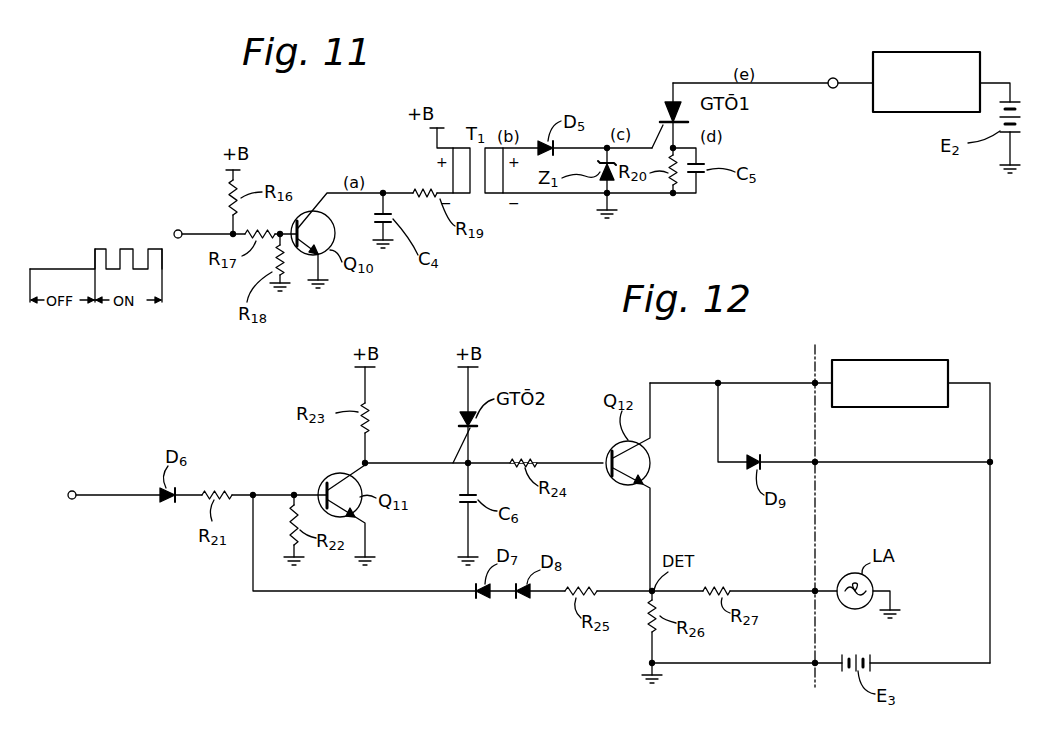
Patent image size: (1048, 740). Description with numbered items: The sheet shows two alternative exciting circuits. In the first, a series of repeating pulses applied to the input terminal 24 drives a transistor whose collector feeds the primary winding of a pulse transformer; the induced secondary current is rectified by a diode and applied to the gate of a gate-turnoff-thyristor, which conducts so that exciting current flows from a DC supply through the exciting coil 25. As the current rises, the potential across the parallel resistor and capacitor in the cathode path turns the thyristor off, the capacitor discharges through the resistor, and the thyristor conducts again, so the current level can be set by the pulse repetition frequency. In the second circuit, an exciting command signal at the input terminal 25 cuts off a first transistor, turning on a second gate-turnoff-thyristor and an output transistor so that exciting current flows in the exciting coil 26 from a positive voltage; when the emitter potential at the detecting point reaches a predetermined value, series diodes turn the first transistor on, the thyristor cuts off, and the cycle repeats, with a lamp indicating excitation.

In FIG. 11, the input terminal 24 is at (178, 230).
In FIG. 11, the exciting coil 25 is at (873, 53).
In FIG. 12, the exciting coil 25 is at (72, 499).
In FIG. 12, the exciting coil 26 is at (890, 360).